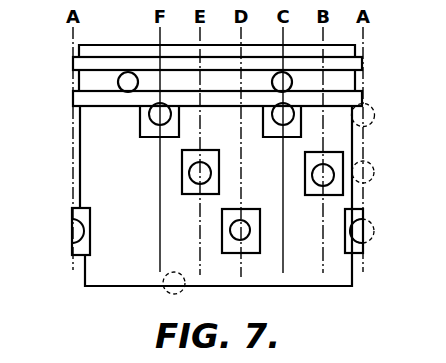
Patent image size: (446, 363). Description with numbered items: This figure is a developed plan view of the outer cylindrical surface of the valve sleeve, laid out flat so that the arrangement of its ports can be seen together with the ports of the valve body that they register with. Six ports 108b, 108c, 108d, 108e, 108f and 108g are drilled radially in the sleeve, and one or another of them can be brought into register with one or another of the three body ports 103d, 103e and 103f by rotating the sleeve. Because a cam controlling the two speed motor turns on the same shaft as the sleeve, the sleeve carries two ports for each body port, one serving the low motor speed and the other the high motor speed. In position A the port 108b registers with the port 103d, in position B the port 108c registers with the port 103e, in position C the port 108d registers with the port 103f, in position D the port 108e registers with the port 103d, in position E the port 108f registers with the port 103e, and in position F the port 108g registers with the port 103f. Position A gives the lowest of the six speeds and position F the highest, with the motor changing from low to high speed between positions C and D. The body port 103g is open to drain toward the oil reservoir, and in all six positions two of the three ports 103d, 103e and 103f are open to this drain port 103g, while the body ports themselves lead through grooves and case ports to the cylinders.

The port 108g is at (148, 117).
The port 108d is at (270, 118).
The port 108f is at (186, 174).
The port 108c is at (306, 177).
The port 108e is at (222, 236).
The port 108b is at (71, 232).
The port 103f is at (373, 125).
The port 103e is at (373, 180).
The port 103d is at (368, 243).
The port 103g is at (165, 292).